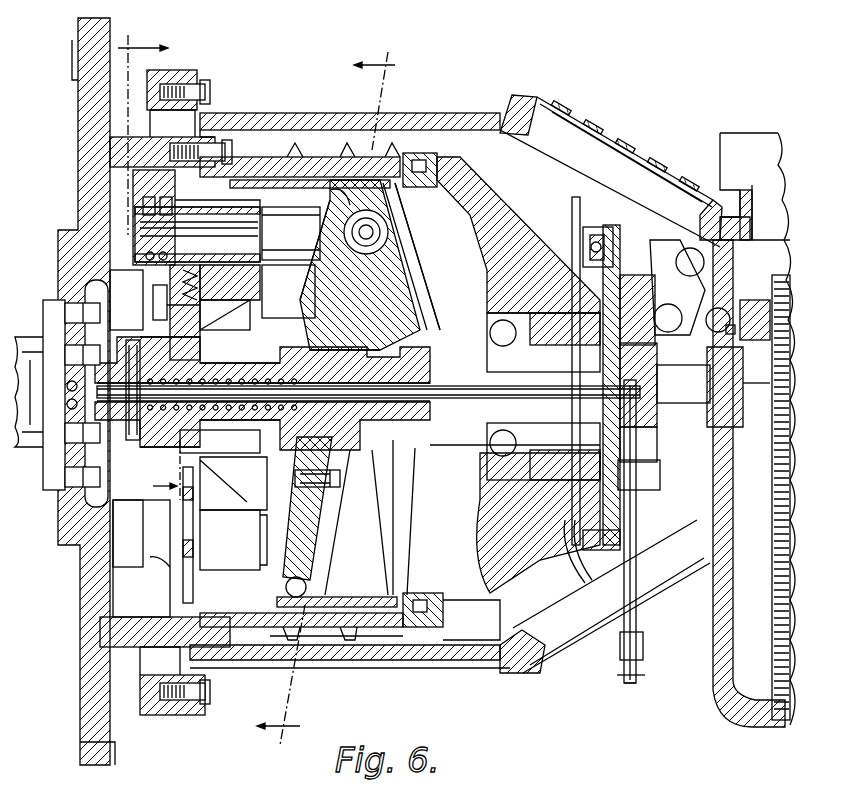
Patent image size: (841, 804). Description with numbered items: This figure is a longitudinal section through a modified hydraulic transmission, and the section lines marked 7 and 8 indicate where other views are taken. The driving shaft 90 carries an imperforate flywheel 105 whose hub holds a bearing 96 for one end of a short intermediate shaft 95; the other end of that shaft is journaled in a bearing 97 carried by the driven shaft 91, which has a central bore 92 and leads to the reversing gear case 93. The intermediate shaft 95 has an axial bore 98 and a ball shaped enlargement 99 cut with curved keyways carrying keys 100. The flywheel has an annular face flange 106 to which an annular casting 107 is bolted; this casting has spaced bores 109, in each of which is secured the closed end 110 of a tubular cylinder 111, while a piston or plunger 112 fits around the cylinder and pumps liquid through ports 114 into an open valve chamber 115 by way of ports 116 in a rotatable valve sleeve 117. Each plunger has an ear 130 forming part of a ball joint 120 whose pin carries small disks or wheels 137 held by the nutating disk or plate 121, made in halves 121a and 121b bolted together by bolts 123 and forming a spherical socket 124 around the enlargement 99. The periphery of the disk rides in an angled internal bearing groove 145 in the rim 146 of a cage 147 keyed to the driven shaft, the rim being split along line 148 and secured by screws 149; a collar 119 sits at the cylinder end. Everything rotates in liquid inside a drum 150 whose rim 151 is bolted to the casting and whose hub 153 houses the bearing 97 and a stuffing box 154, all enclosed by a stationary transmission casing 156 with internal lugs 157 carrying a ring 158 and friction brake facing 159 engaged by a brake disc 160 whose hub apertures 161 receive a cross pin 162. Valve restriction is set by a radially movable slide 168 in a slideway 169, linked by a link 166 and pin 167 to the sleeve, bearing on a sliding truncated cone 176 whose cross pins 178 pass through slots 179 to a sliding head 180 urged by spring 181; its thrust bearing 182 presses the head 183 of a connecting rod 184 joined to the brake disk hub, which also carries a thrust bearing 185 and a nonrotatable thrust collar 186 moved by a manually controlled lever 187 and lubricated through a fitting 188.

The flywheel 105 is at (80, 63).
The section line 8 is at (155, 309).
The annular casting 107 is at (212, 143).
The annular face flange 106 is at (128, 652).
The rim 151 is at (256, 125).
The stationary transmission casing 156 is at (485, 125).
The section line 7 is at (326, 397).
The rim 146 is at (330, 175).
The internal bearing groove 145 is at (378, 182).
The bores 109 is at (246, 205).
The rotatable valve sleeve 117 is at (140, 197).
The open valve chamber 115 is at (135, 215).
The extension or ear 130 is at (345, 205).
The closed end 110 is at (110, 232).
The ports 114 is at (197, 234).
The tubular cylinder 111 is at (199, 239).
The collar 119 is at (291, 233).
The piston or plunger 112 is at (252, 522).
The ball joint 120 is at (398, 216).
The disks or wheels 137 is at (388, 230).
The cage 147 is at (408, 240).
The internal lugs 157 is at (572, 205).
The ring 158 is at (590, 235).
The brake disc 160 is at (614, 233).
The friction brake facing 159 is at (614, 250).
The hub 153 is at (535, 268).
The thrust bearing 185 is at (638, 302).
The manually controlled lever 187 is at (677, 287).
The ports 116 is at (110, 280).
The radially movable slide 168 is at (180, 280).
The link 166 is at (152, 300).
The pin 167 is at (152, 312).
The radial slideway 169 is at (210, 325).
The nutating disk or plate 121 is at (400, 265).
The half of nutating disk 121a is at (395, 285).
The half of nutating disk 121b is at (390, 300).
The keys 100 is at (262, 393).
The bearing 96 is at (55, 350).
The driving shaft 90 is at (35, 450).
The thrust bearing 182 is at (105, 398).
The head 183 is at (106, 388).
The longitudinal slots 179 is at (222, 374).
The sliding head 180 is at (222, 414).
The cross pins 178 is at (128, 440).
The sliding truncated cone 176 is at (230, 408).
The helical compression spring 181 is at (198, 392).
The spherical socket 124 is at (292, 470).
The cross pin or bar 162 is at (660, 378).
The apertures 161 is at (650, 432).
The nonrotatable thrust collar 186 is at (642, 480).
The fitting 188 is at (640, 670).
The driven shaft 91 is at (480, 420).
The central bore 92 is at (478, 440).
The intermediate shaft 95 is at (364, 522).
The axial bore 98 is at (374, 517).
The ball shaped enlargement 99 is at (385, 521).
The connecting rod 184 is at (447, 440).
The bearing 97 is at (515, 486).
The bolts 123 is at (320, 533).
The stuffing box 154 is at (530, 540).
The screws 149 is at (331, 586).
The split line 148 is at (312, 620).
The drum 150 is at (470, 620).
The reversing gear case 93 is at (752, 715).